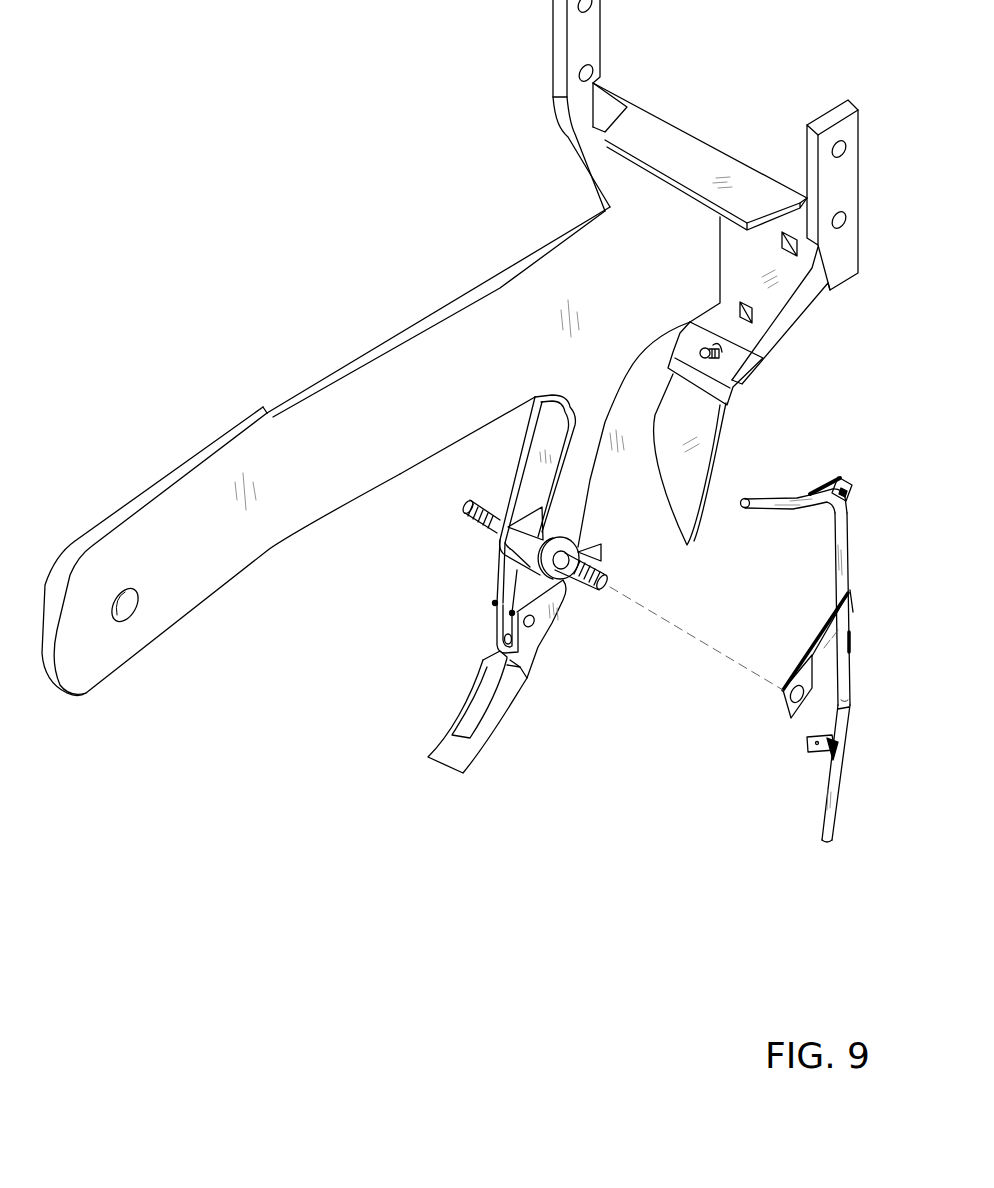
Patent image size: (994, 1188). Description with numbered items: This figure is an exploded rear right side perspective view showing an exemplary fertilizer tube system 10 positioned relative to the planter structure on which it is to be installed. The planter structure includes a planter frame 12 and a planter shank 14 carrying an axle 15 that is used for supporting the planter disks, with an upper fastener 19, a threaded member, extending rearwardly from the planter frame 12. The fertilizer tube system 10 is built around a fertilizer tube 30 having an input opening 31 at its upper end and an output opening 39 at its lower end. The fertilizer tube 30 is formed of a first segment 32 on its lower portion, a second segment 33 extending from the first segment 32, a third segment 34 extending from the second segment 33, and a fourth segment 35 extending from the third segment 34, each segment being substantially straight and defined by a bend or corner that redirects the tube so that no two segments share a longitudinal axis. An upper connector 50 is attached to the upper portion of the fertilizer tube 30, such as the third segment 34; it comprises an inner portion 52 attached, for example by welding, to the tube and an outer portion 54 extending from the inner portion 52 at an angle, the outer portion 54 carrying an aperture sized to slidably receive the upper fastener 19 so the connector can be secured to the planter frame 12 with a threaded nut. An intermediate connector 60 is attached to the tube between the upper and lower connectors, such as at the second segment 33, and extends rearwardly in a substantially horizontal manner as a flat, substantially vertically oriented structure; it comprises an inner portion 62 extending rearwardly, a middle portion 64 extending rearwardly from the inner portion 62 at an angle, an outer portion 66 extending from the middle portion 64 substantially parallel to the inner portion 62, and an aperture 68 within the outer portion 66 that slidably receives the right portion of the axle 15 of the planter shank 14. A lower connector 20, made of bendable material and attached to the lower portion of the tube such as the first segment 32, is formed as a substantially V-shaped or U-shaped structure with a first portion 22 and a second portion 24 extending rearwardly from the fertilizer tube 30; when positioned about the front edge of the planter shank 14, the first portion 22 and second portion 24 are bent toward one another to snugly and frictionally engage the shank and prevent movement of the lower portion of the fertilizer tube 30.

The fertilizer tube system 10 is at (228, 98).
The planter frame 12 is at (332, 350).
The planter shank 14 is at (613, 490).
The axle 15 is at (593, 587).
The upper fastener 19 is at (737, 362).
The lower connector 20 is at (765, 752).
The first portion 22 is at (837, 755).
The second portion 24 is at (807, 752).
The fertilizer tube 30 is at (778, 845).
The input opening 31 is at (740, 507).
The first segment 32 is at (820, 805).
The second segment 33 is at (833, 577).
The third segment 34 is at (808, 513).
The fourth segment 35 is at (767, 497).
The output opening 39 is at (825, 845).
The upper connector 50 is at (843, 460).
The inner portion 52 is at (815, 482).
The outer portion 54 is at (848, 480).
The intermediate connector 60 is at (762, 707).
The inner portion 62 is at (827, 640).
The middle portion 64 is at (810, 657).
The outer portion 66 is at (827, 683).
The aperture 68 is at (772, 688).